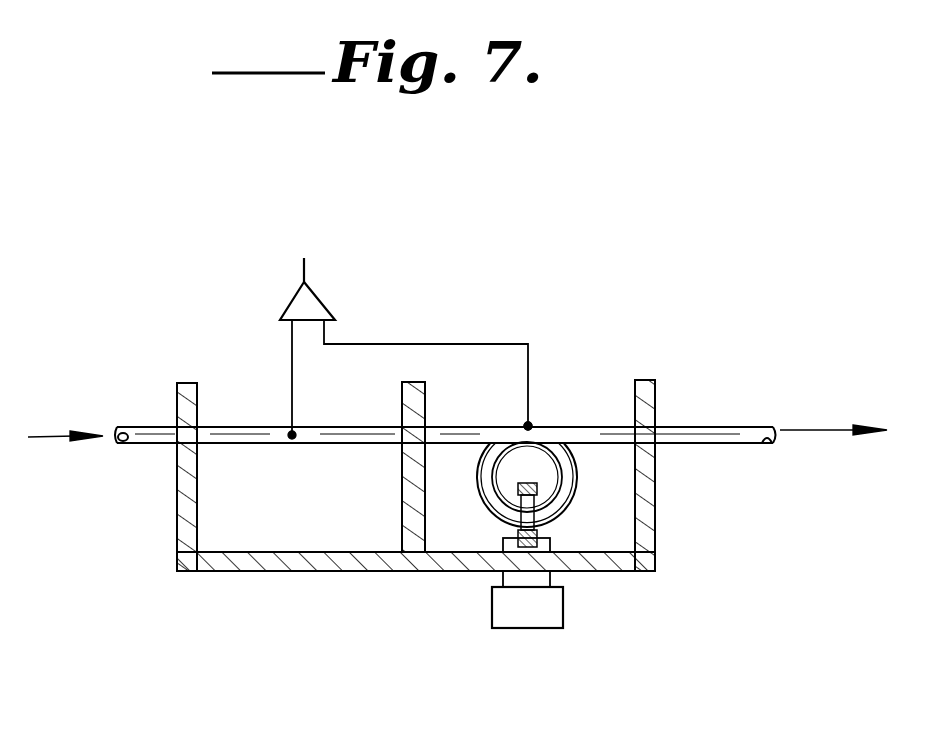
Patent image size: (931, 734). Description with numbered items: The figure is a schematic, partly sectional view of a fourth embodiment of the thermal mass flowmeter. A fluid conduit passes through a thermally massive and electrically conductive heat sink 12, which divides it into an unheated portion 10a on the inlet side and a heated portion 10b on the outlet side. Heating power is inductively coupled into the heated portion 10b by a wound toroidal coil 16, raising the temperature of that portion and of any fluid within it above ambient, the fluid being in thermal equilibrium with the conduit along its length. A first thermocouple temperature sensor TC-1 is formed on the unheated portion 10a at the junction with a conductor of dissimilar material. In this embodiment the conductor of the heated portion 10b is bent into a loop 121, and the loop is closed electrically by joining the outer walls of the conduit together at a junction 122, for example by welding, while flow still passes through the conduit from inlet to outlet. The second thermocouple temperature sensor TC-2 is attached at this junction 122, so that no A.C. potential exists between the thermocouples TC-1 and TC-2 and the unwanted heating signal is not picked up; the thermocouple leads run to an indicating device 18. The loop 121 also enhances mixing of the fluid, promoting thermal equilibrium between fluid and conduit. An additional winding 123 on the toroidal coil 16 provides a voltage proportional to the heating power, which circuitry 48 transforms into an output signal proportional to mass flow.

The unheated portion of the conduit 10a is at (243, 445).
The heated portion of the conduit 10b is at (442, 444).
The heat sink 12 is at (305, 572).
The toroidal coil 16 is at (536, 481).
The indicator 18 is at (320, 300).
The circuitry 48 is at (557, 608).
The loop 121 is at (490, 503).
The junction 122 is at (541, 413).
The additional winding 123 is at (553, 539).
The thermocouple temperature sensor TC-1 is at (290, 430).
The thermocouple temperature sensor TC-2 is at (526, 422).